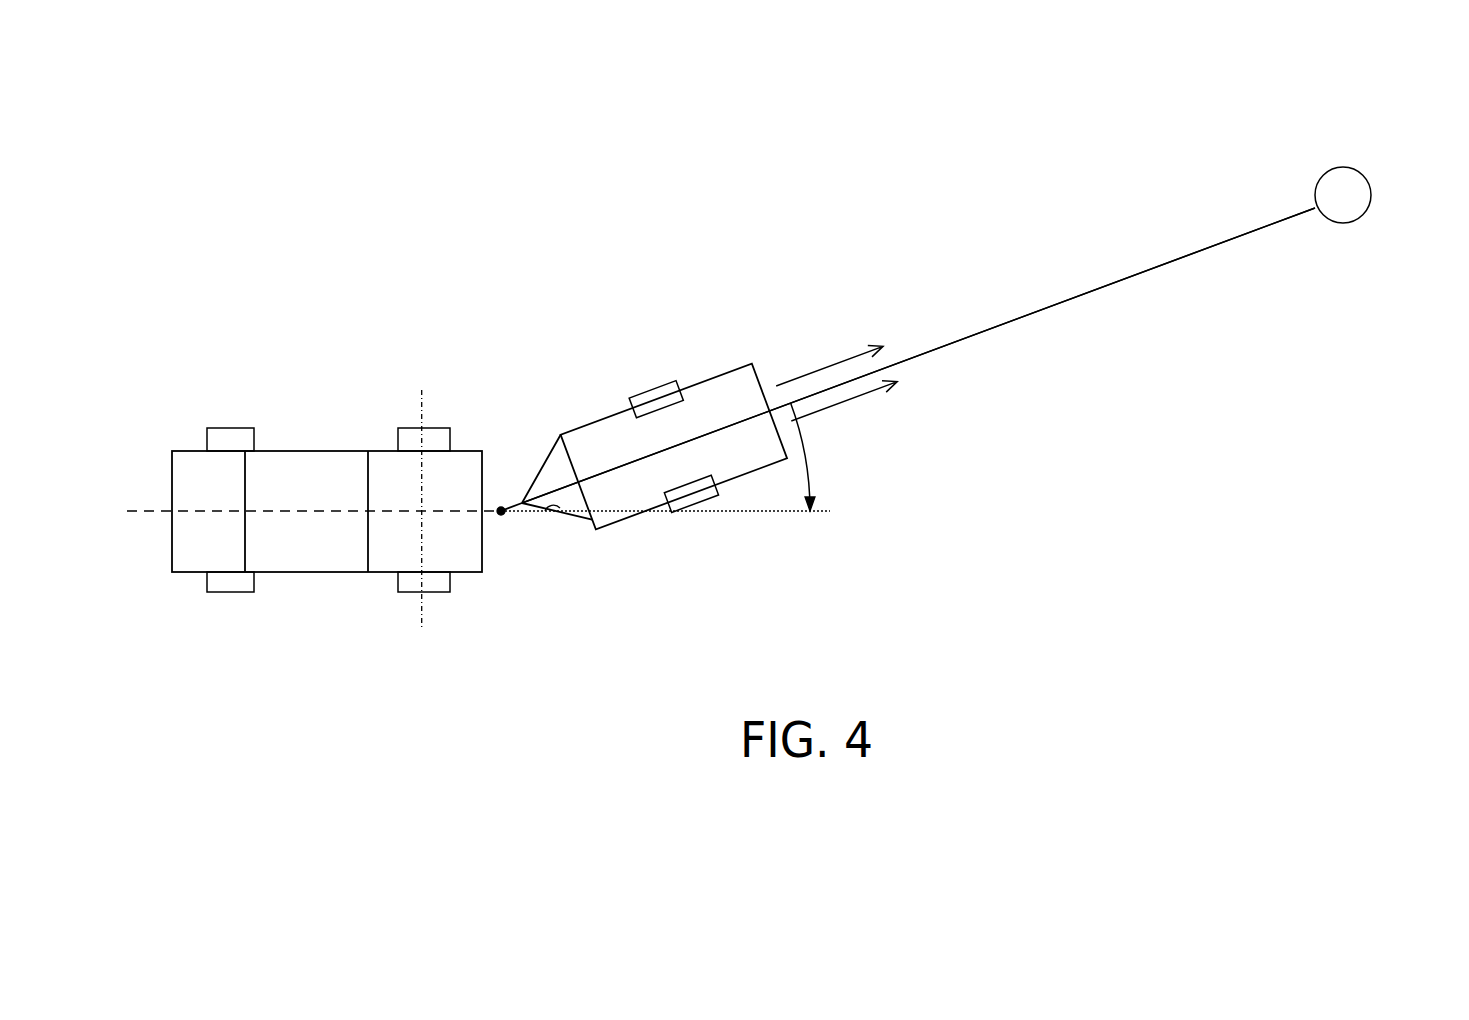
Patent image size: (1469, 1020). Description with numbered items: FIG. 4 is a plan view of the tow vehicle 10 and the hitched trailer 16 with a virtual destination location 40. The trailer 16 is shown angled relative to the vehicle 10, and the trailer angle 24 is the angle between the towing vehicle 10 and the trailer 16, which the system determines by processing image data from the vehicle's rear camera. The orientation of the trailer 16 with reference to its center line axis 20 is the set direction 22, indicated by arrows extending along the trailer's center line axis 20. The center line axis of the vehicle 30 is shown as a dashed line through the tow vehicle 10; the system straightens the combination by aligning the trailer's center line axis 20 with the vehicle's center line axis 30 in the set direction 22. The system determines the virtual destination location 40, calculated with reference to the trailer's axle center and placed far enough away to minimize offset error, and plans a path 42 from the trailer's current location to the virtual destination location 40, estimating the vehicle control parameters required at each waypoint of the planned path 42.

The vehicle 10 is at (186, 451).
The trailer 16 is at (586, 425).
The center line axis of the trailer 20 is at (771, 396).
The set direction 22 is at (909, 383).
The trailer angle 24 is at (720, 470).
The center line axis of the vehicle 30 is at (129, 513).
The virtual destination location 40 is at (1315, 190).
The planned path 42 is at (1148, 272).